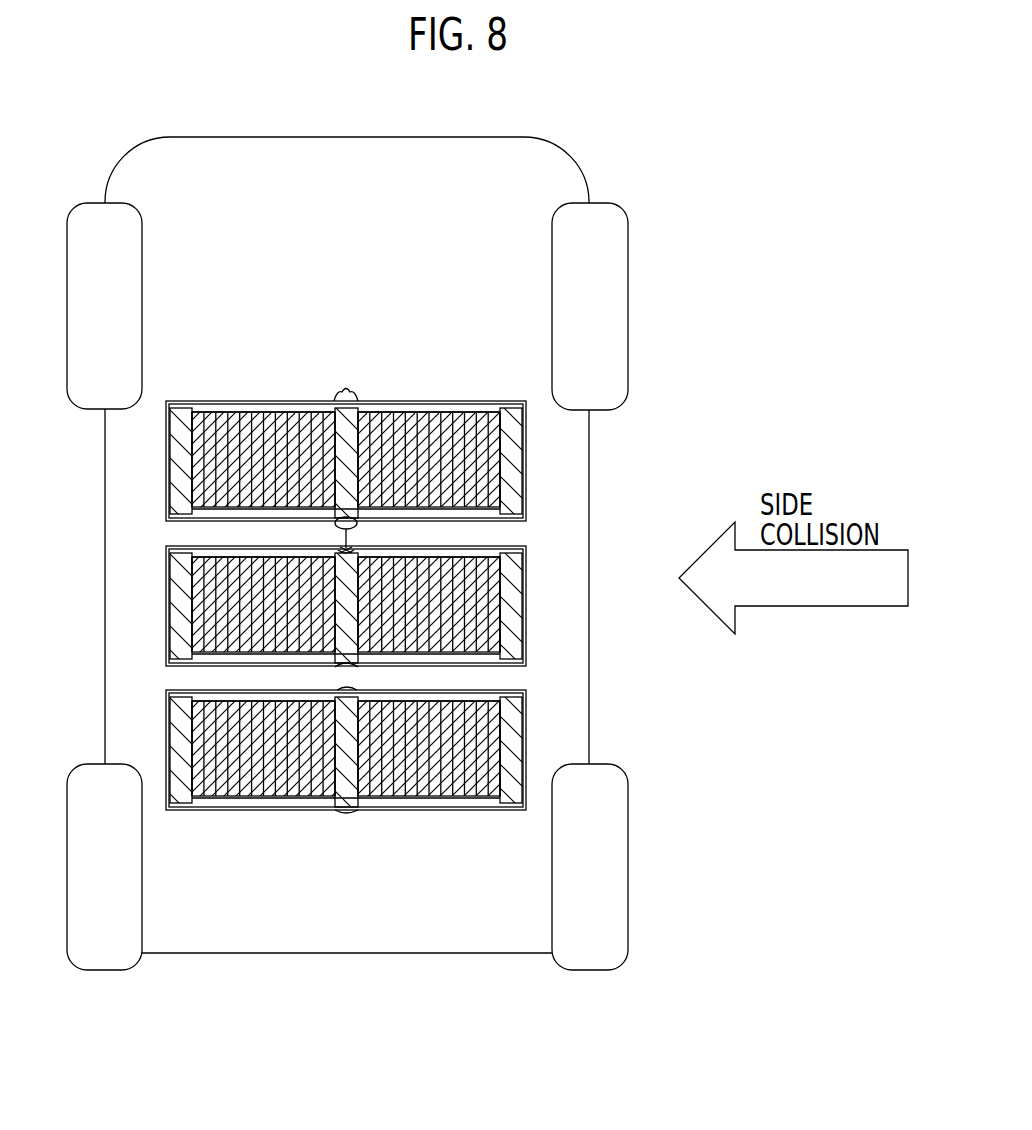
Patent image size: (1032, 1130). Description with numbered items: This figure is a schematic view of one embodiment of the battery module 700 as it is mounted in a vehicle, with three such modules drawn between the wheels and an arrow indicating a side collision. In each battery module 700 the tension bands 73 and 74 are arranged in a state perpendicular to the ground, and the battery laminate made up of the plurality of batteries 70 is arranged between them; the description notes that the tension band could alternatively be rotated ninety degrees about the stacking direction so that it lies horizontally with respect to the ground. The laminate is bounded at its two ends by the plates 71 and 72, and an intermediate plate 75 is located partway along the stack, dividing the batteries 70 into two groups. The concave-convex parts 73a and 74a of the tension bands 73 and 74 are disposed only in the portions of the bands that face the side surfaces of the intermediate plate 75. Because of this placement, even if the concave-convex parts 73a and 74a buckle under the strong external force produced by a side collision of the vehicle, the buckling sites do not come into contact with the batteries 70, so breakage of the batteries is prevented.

The battery module 700 is at (552, 417).
The batteries 70 is at (247, 508).
The left end plate 71 is at (178, 462).
The right end plate 72 is at (514, 458).
The tension band 73 is at (287, 401).
The concave-convex part 73a is at (348, 443).
The tension band 74 is at (263, 521).
The concave-convex part 74a is at (340, 550).
The intermediate plate 75 is at (352, 410).